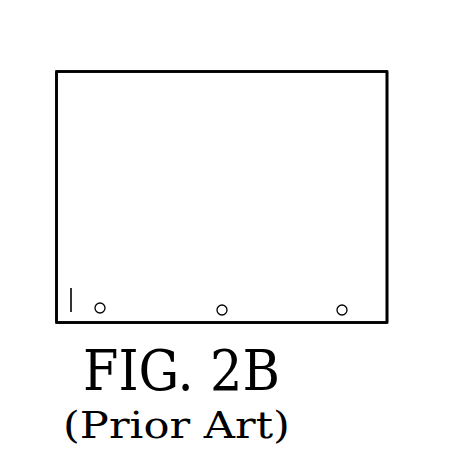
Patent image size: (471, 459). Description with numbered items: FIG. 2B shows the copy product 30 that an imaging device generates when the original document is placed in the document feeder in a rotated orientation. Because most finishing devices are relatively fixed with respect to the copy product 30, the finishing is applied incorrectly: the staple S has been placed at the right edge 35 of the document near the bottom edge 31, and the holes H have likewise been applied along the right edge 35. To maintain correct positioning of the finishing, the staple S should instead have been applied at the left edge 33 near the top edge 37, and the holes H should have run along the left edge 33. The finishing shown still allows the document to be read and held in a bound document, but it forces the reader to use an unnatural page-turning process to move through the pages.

The copy product 30 is at (268, 82).
The bottom edge 31 is at (56, 148).
The left edge 33 is at (168, 71).
The right edge 35 is at (362, 323).
The top edge 37 is at (388, 262).
The staple S is at (71, 300).
The holes H is at (97, 313).